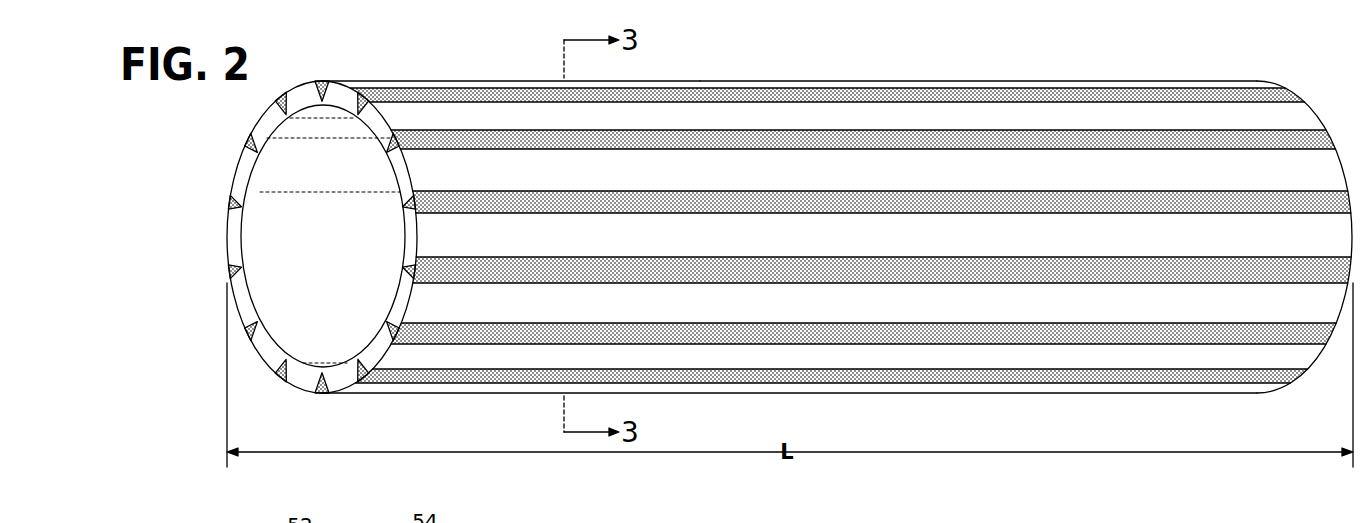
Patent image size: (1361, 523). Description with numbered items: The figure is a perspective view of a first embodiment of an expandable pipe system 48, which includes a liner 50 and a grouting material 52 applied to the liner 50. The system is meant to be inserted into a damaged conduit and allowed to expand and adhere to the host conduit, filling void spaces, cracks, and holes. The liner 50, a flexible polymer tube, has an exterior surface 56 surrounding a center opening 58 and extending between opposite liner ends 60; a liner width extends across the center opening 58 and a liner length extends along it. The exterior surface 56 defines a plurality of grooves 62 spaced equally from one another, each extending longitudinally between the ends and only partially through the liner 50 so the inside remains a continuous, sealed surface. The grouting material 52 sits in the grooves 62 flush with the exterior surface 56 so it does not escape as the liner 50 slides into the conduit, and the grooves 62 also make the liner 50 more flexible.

The expandable pipe system 48 is at (994, 63).
The liner 50 is at (839, 80).
The grouting material 52 is at (262, 150).
The exterior surface 56 is at (421, 81).
The center opening 58 is at (323, 236).
The liner ends 60 is at (323, 83).
The grooves 62 is at (323, 88).